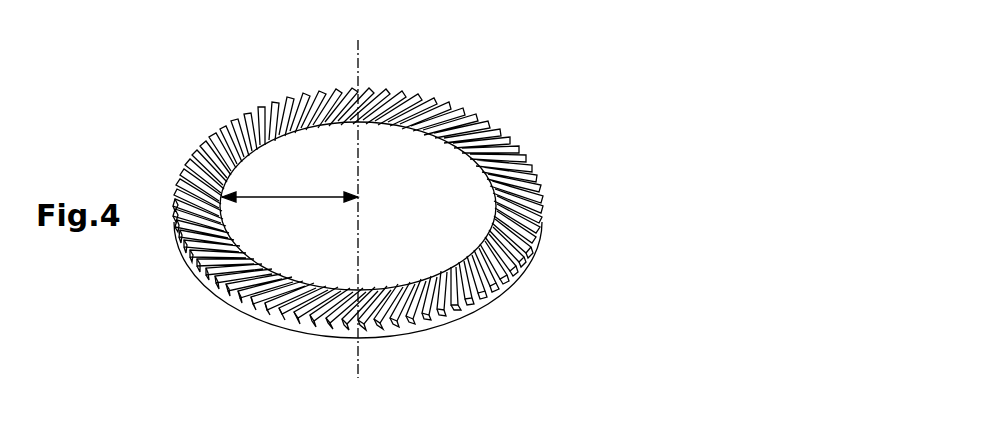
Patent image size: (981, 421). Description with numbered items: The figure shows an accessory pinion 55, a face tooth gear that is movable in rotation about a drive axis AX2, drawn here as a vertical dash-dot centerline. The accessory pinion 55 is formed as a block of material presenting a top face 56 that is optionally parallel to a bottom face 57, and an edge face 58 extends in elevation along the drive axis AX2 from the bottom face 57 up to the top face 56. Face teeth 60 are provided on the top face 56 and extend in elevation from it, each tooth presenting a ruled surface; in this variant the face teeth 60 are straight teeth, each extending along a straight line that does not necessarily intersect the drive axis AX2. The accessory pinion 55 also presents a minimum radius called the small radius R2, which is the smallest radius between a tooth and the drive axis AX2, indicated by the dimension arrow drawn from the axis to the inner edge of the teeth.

The accessory pinion 55 is at (415, 239).
The top face 56 is at (443, 187).
The bottom face 57 is at (440, 333).
The edge face 58 is at (519, 271).
The face teeth 60 is at (552, 214).
The drive axis AX2 is at (358, 72).
The small radius R2 is at (290, 186).